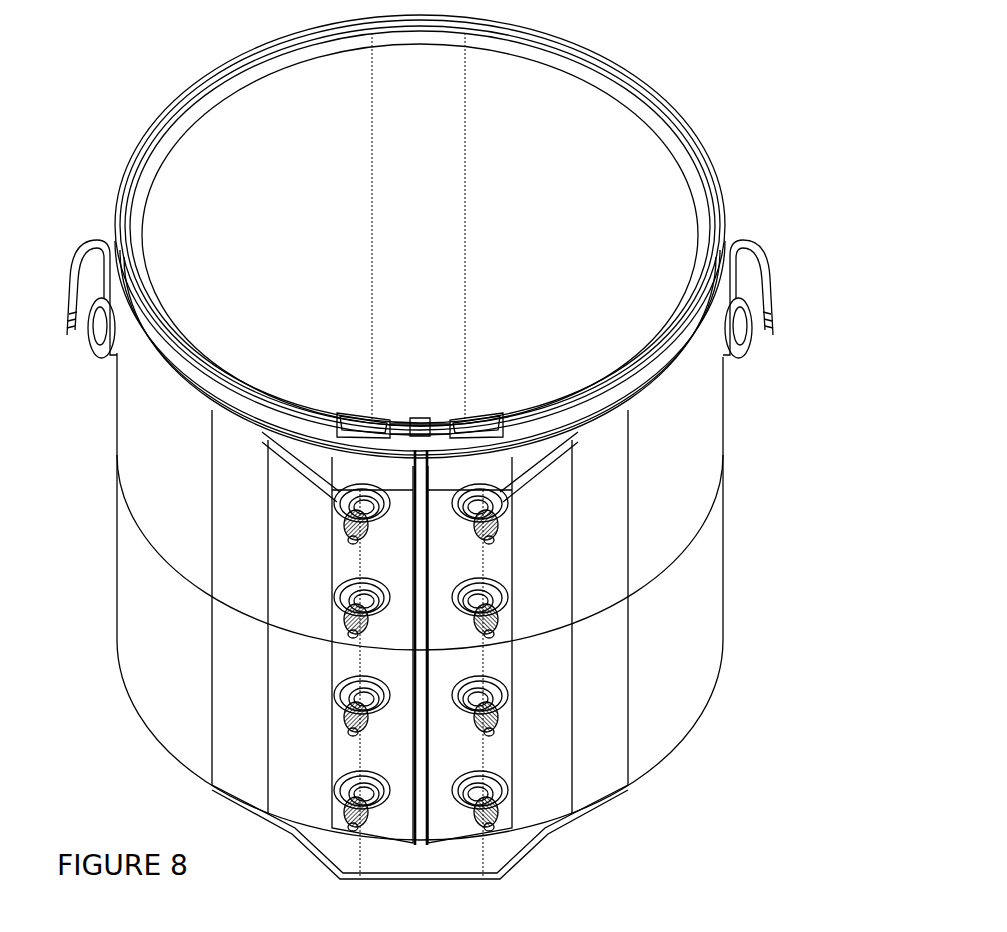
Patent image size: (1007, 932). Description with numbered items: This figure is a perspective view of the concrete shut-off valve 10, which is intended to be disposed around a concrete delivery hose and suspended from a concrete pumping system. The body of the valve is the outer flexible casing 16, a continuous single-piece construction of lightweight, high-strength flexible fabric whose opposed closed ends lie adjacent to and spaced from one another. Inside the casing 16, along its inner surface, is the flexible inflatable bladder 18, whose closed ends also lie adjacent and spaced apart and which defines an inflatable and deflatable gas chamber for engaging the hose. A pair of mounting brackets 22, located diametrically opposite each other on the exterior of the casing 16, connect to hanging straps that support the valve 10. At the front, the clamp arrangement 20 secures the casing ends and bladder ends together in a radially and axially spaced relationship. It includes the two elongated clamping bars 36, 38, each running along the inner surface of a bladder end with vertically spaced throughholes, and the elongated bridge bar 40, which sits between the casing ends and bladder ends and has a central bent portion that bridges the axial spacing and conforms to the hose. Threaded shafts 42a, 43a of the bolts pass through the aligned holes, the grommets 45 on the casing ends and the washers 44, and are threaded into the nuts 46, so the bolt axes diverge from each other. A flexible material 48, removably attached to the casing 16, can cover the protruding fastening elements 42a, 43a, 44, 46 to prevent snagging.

The concrete shut-off valve 10 is at (688, 100).
The outer flexible casing 16 is at (717, 193).
The flexible inflatable bladder 18 is at (658, 335).
The clamp arrangement 20 is at (430, 416).
The mounting bracket 22 is at (84, 344).
The clamping bar 36 is at (470, 420).
The clamping bar 38 is at (363, 417).
The bridge bar 40 is at (420, 445).
The threaded shaft 42a is at (492, 537).
The threaded shaft 43a is at (350, 537).
The washer 44 is at (342, 498).
The grommet 45 is at (342, 497).
The nut 46 is at (372, 510).
The flexible material 48 is at (552, 828).